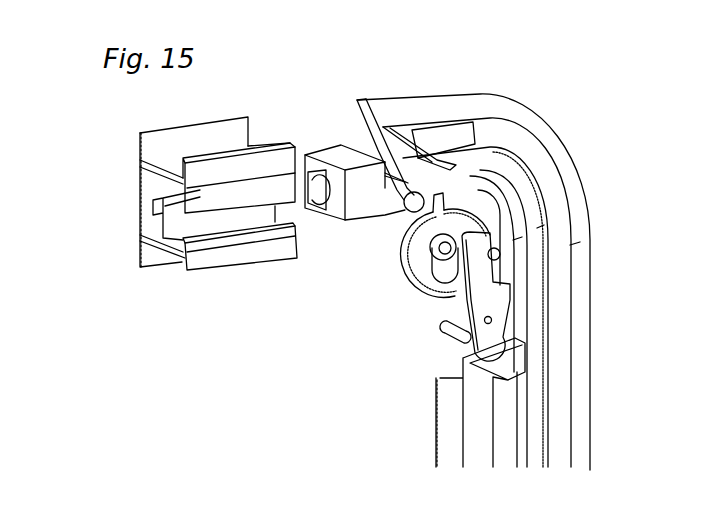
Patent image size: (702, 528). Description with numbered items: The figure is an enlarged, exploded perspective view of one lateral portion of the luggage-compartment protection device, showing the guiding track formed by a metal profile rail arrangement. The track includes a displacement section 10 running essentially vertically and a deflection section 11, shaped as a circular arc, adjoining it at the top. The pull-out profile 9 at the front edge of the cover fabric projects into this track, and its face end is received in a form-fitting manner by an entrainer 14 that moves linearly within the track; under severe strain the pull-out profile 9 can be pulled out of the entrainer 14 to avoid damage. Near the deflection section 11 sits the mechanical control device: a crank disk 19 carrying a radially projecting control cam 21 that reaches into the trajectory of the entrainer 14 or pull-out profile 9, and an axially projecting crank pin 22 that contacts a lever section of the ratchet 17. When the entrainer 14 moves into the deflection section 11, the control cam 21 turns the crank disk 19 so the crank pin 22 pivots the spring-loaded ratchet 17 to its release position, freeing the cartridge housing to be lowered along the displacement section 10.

The pull-out profile 9 is at (358, 104).
The displacement section 10 is at (172, 287).
The deflection section 11 is at (535, 150).
The entrainer 14 is at (351, 218).
The ratchet 17 is at (473, 300).
The crank disk 19 is at (412, 258).
The control cam 21 is at (447, 199).
The crank pin 22 is at (492, 258).